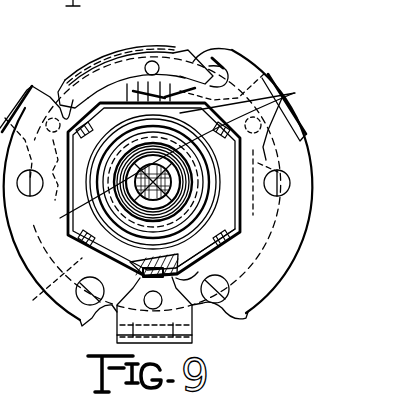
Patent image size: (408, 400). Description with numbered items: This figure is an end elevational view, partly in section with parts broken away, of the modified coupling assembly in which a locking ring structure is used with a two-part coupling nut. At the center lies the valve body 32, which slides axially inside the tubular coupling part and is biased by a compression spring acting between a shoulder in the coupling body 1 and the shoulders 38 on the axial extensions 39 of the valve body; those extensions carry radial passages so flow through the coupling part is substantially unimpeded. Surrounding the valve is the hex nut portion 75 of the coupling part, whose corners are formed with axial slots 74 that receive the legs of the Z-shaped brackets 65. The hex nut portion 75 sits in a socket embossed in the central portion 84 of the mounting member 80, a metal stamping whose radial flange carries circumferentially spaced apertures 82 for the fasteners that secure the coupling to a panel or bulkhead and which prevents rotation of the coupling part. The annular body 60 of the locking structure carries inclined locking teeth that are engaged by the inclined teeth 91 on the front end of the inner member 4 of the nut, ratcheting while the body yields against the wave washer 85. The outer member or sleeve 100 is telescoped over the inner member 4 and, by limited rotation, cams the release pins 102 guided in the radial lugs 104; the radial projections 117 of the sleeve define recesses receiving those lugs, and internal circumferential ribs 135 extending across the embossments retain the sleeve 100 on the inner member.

The coupling body 1 is at (292, 96).
The inner member of the coupling nut 4 is at (78, 70).
The valve body 32 is at (68, 210).
The shoulders 38 is at (121, 152).
The axial extensions 39 is at (149, 135).
The annular body 60 is at (195, 326).
The brackets 65 is at (110, 312).
The axial slots 74 is at (150, 272).
The hex nut portion 75 is at (205, 255).
The mounting member 80 is at (265, 294).
The apertures 82 is at (225, 306).
The central portion 84 is at (246, 213).
The wave washer 85 is at (38, 290).
The inclined teeth 91 is at (148, 140).
The outer member or sleeve 100 is at (284, 58).
The release pins 102 is at (147, 60).
The radial lugs or ears 104 is at (186, 52).
The radial projections 117 is at (147, 44).
The internal circumferential ribs 135 is at (90, 100).